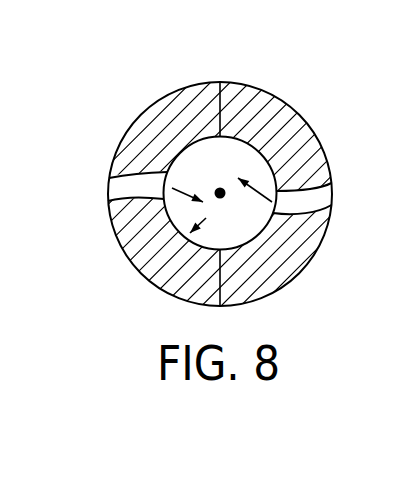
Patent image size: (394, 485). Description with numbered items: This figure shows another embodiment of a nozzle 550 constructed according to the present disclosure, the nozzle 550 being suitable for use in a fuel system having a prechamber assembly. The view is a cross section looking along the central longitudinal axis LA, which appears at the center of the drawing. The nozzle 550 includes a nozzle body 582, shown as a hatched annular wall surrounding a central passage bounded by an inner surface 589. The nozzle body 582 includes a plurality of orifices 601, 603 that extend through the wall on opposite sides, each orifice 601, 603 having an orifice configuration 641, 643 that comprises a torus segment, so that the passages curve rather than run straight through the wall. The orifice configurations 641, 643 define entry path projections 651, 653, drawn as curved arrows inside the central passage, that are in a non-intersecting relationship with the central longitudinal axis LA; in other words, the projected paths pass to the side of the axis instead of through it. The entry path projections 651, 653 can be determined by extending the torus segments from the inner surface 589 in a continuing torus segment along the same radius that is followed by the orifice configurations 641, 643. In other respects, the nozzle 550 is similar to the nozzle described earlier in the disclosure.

The nozzle 550 is at (97, 110).
The nozzle body 582 is at (129, 261).
The inner surface 589 is at (206, 218).
The orifice 601 is at (112, 177).
The orifice configuration 641 is at (112, 203).
The orifice configuration 643 is at (307, 188).
The orifice 603 is at (306, 216).
The entry path projection 651 is at (172, 188).
The entry path projection 653 is at (272, 202).
The central longitudinal axis LA is at (223, 187).